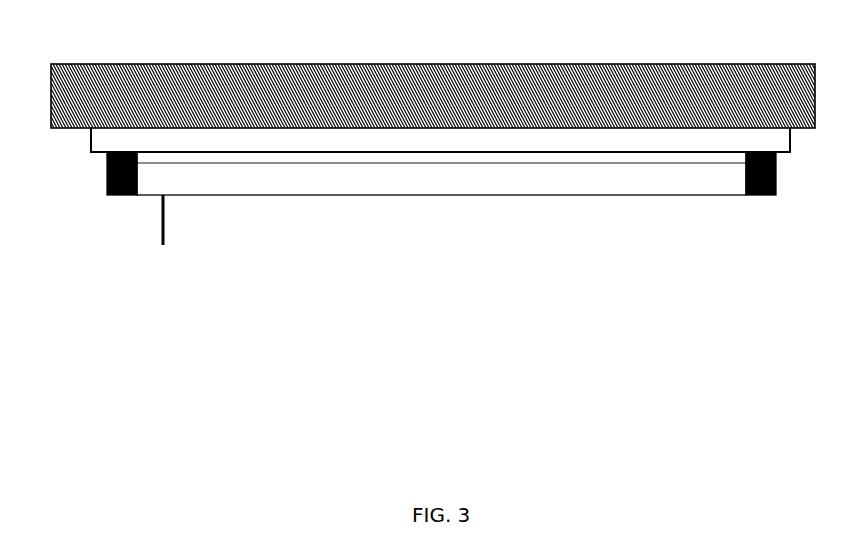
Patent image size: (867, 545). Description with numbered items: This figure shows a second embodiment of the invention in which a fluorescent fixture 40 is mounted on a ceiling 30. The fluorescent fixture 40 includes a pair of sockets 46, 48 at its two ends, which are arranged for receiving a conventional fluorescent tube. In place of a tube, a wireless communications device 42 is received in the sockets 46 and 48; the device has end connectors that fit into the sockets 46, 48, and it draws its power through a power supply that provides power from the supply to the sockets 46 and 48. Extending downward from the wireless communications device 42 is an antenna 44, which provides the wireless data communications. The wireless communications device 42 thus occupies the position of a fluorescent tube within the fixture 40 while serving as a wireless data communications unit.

The ceiling 30 is at (67, 128).
The fluorescent fixture 40 is at (89, 130).
The wireless communications device 42 is at (440, 195).
The antenna 44 is at (167, 227).
The socket 46 is at (760, 195).
The socket 48 is at (122, 195).